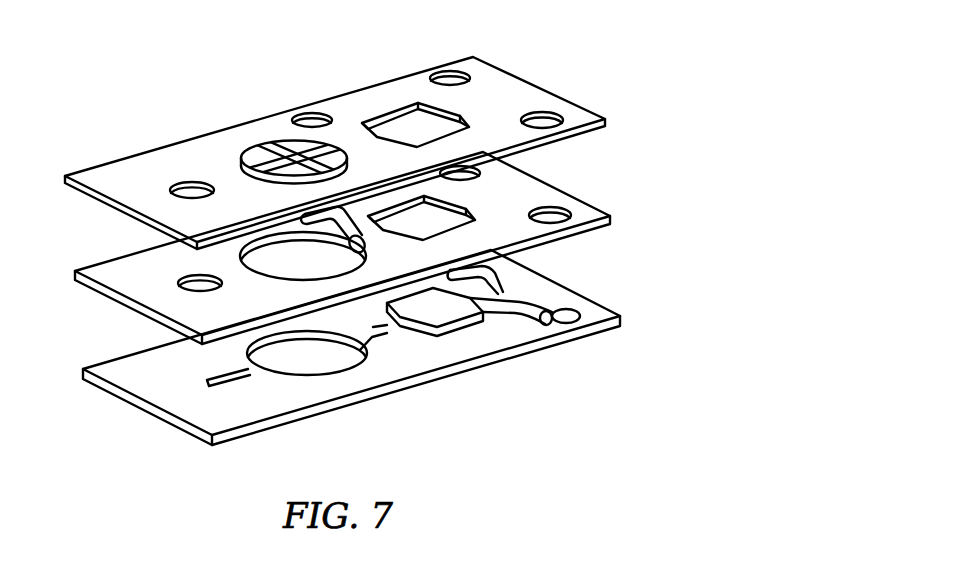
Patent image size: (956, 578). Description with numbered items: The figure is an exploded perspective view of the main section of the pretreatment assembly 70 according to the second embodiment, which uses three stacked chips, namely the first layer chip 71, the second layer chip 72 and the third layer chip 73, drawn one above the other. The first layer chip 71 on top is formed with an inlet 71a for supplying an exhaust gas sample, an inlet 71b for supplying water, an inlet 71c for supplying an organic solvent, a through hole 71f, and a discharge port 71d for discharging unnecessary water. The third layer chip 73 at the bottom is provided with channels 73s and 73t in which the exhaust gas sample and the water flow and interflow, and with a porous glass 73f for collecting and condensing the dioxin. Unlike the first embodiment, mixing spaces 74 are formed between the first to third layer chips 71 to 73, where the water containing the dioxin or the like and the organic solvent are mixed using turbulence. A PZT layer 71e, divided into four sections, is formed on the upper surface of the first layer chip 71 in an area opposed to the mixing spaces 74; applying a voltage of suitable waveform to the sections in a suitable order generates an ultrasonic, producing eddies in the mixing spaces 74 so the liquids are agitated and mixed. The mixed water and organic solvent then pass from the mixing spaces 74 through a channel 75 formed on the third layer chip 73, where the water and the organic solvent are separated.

The pretreatment assembly 70 is at (369, 235).
The first layer chip 71 is at (361, 137).
The inlet 71a is at (449, 76).
The inlet 71b is at (553, 124).
The inlet 71c is at (308, 116).
The discharge port 71d is at (190, 186).
The PZT layer 71e is at (262, 156).
The through hole 71f is at (412, 126).
The second layer chip 72 is at (577, 201).
The third layer chip 73 is at (378, 340).
The porous glass 73f is at (447, 314).
The channel 73s is at (520, 266).
The channel 73t is at (543, 283).
The mixing spaces 74 is at (313, 258).
The channel 75 is at (248, 373).